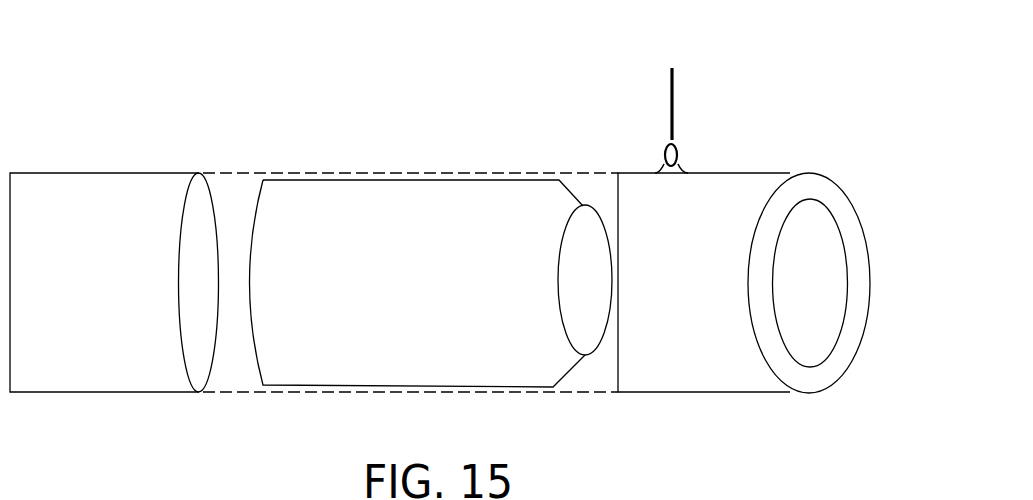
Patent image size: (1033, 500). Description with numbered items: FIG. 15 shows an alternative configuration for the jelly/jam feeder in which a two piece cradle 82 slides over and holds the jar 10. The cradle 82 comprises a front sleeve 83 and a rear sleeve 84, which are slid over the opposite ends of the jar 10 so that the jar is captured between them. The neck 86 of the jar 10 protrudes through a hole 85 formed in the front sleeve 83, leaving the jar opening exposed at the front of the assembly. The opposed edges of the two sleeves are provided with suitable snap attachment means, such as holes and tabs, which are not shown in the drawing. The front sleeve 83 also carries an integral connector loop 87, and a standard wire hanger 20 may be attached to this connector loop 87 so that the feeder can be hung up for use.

The jar 10 is at (403, 302).
The wire hanger 20 is at (675, 87).
The two piece cradle 82 is at (789, 145).
The front sleeve 83 is at (712, 306).
The rear sleeve 84 is at (110, 290).
The hole 85 is at (832, 288).
The neck 86 is at (568, 198).
The connector loop 87 is at (680, 165).